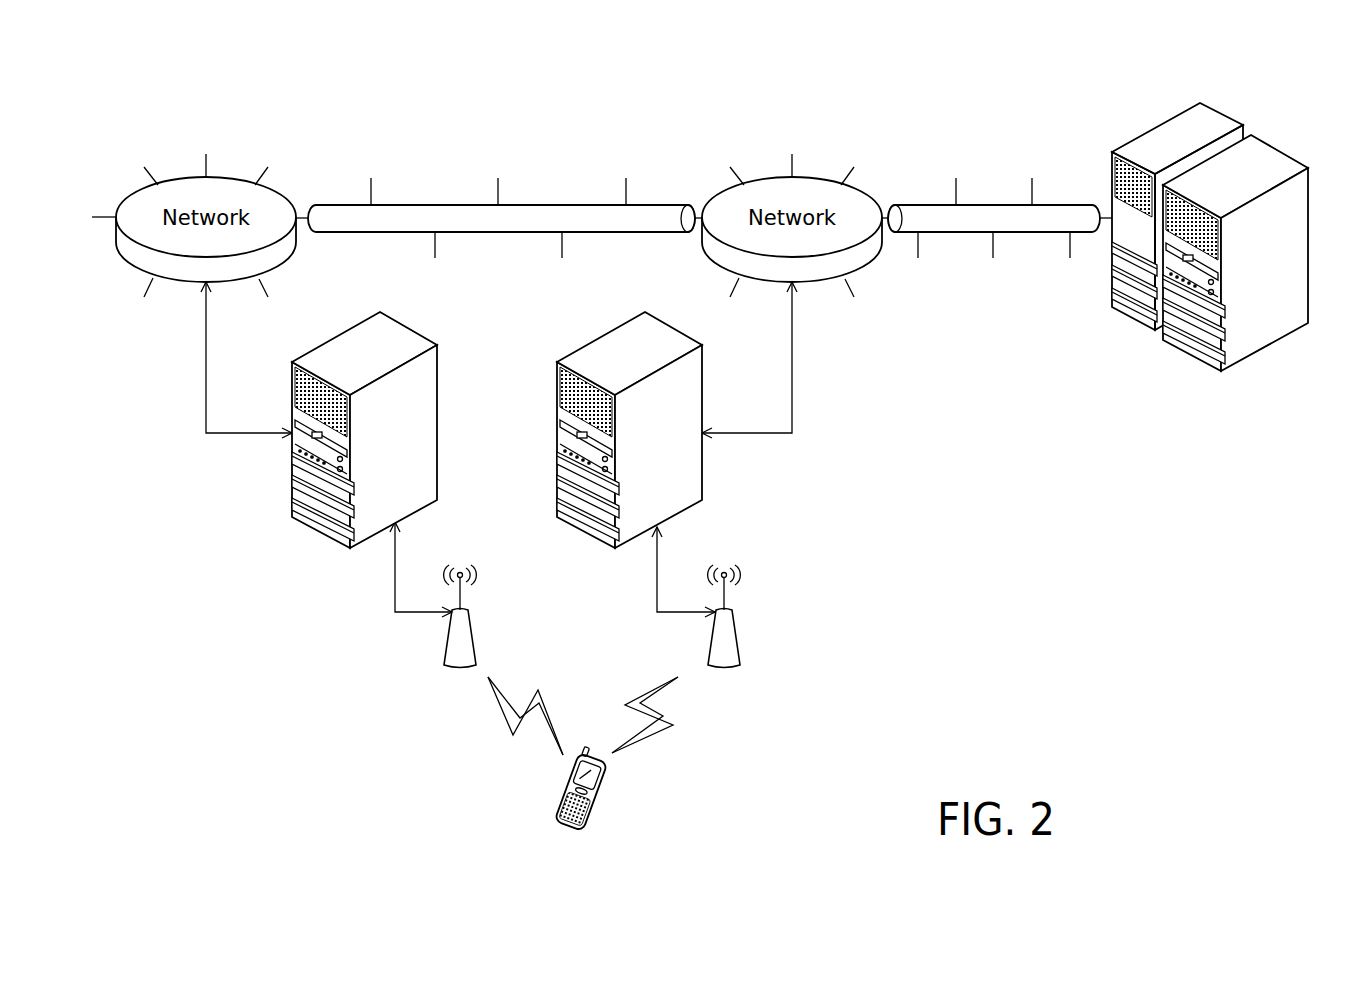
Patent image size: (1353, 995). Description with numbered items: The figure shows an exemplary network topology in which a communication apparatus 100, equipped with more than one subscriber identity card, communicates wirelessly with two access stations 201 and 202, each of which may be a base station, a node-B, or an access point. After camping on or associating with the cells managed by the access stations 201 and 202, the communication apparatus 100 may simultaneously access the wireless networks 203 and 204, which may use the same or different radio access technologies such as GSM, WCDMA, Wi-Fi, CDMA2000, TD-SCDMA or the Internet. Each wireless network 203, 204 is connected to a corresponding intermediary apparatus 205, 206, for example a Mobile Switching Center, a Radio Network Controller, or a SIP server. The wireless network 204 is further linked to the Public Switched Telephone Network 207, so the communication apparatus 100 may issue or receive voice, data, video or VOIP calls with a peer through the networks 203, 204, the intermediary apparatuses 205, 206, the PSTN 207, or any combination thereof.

The communication apparatus 100 is at (606, 794).
The access station 201 is at (477, 636).
The access station 202 is at (741, 636).
The wireless network 203 is at (180, 178).
The wireless network 204 is at (764, 178).
The intermediary apparatus 205 is at (437, 367).
The intermediary apparatus 206 is at (702, 367).
The Public Switched Telephone Network (PSTN) 207 is at (1154, 128).